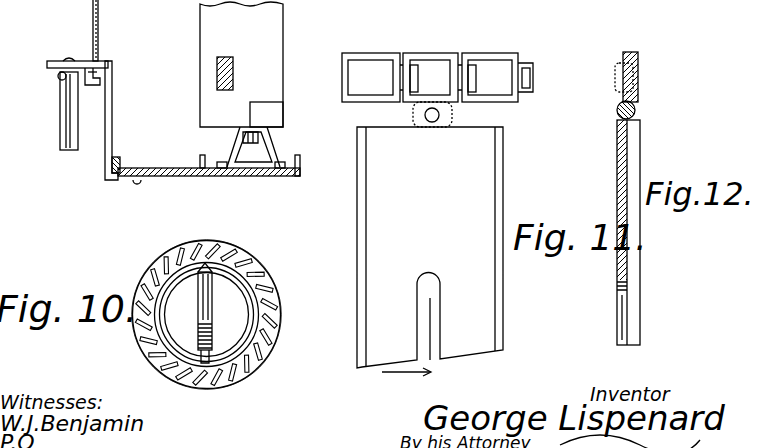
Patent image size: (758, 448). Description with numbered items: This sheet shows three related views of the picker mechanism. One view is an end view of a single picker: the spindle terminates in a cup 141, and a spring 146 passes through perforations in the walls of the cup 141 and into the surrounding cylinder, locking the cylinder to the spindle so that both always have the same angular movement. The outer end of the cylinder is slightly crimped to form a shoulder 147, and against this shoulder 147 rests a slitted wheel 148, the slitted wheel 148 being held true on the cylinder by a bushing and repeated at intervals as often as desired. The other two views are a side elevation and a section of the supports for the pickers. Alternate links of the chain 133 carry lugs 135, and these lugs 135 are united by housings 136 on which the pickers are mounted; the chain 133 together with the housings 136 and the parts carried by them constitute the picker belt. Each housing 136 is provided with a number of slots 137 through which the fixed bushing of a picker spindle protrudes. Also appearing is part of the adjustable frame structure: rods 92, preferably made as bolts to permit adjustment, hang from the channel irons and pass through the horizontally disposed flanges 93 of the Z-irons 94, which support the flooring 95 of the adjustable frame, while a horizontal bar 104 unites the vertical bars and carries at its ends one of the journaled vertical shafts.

In FIG. 10, the rods 92 is at (114, 30).
In FIG. 10, the horizontally disposed flanges 93 is at (108, 62).
In FIG. 10, the Z-irons 94 is at (112, 122).
In FIG. 10, the flooring 95 is at (166, 168).
In FIG. 10, the horizontally disposed bar 104 is at (217, 80).
In FIG. 11, the chain 133 is at (483, 52).
In FIG. 12, the chain 133 is at (622, 57).
In FIG. 11, the lugs 135 is at (413, 112).
In FIG. 12, the lugs 135 is at (637, 105).
In FIG. 11, the housings 136 is at (430, 247).
In FIG. 12, the housings 136 is at (640, 143).
In FIG. 11, the slots 137 is at (431, 272).
In FIG. 12, the slots 137 is at (618, 308).
In FIG. 10, the cup 141 is at (224, 292).
In FIG. 10, the spring 146 is at (200, 312).
In FIG. 10, the shoulder 147 is at (253, 323).
In FIG. 10, the slitted wheel 148 is at (267, 354).